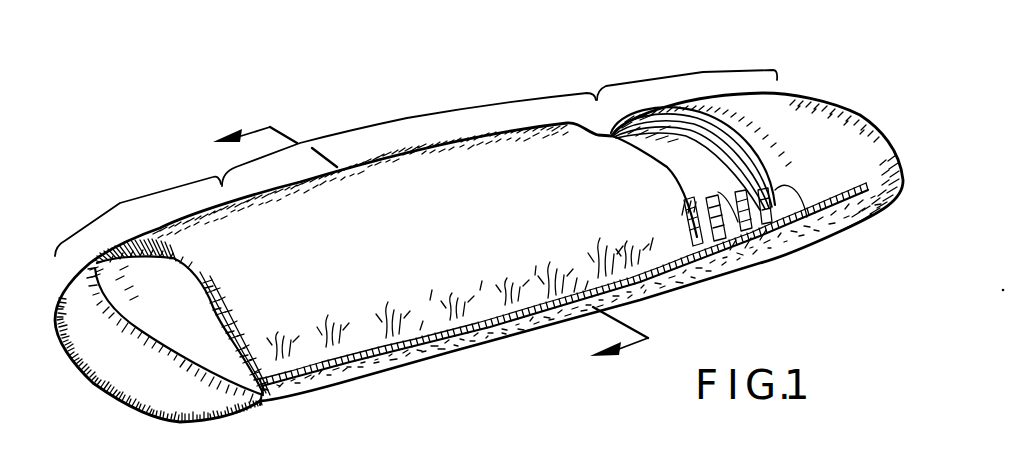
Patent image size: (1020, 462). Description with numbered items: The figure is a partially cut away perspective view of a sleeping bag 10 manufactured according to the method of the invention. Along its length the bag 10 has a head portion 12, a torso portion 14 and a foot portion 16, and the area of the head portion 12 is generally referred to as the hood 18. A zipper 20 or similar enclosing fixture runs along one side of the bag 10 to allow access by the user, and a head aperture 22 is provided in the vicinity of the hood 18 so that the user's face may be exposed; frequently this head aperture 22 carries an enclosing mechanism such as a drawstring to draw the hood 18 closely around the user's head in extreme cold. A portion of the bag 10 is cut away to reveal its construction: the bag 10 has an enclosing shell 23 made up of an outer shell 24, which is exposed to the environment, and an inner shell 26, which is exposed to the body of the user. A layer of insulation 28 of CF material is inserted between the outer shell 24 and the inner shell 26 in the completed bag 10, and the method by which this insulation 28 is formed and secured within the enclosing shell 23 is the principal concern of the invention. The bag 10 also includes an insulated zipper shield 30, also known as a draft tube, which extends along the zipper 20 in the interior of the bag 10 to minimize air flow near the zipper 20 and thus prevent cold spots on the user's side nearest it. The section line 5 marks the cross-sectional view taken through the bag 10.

The section line 5- 5 is at (418, 252).
The sleeping bag 10 is at (463, 77).
The head portion 12 is at (120, 203).
The torso portion 14 is at (407, 118).
The foot portion 16 is at (713, 72).
The hood 18 is at (142, 374).
The zipper 20 is at (468, 330).
The head aperture 22 is at (182, 298).
The enclosing shell 23 is at (838, 90).
The outer shell 24 is at (442, 252).
The inner shell 26 is at (198, 337).
The insulation 28 is at (808, 217).
The zipper shield 30 is at (740, 237).